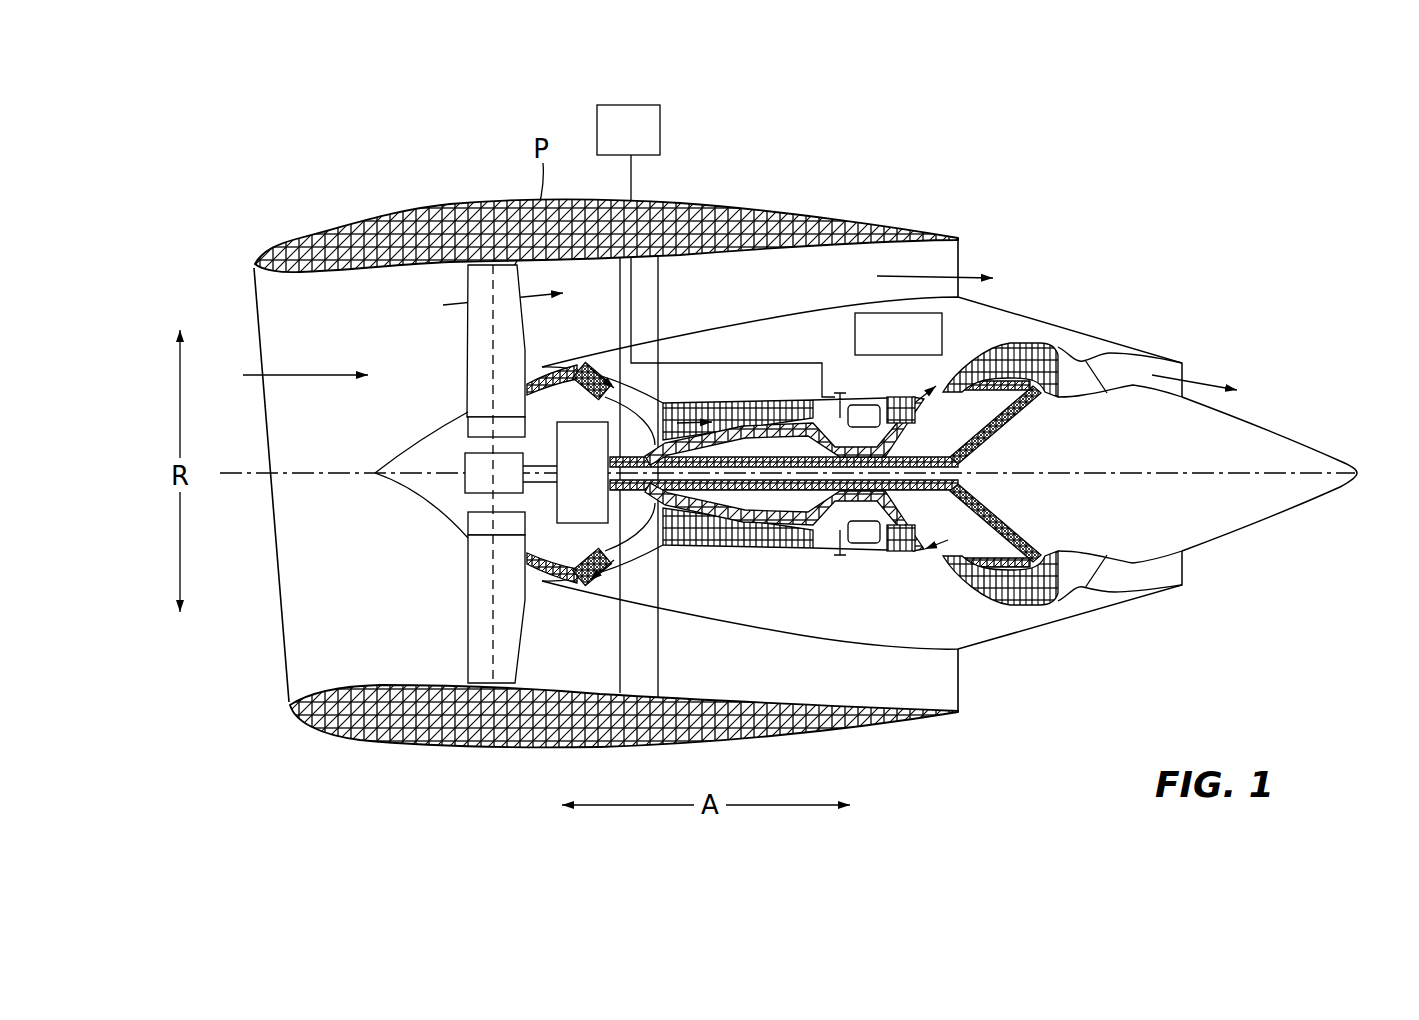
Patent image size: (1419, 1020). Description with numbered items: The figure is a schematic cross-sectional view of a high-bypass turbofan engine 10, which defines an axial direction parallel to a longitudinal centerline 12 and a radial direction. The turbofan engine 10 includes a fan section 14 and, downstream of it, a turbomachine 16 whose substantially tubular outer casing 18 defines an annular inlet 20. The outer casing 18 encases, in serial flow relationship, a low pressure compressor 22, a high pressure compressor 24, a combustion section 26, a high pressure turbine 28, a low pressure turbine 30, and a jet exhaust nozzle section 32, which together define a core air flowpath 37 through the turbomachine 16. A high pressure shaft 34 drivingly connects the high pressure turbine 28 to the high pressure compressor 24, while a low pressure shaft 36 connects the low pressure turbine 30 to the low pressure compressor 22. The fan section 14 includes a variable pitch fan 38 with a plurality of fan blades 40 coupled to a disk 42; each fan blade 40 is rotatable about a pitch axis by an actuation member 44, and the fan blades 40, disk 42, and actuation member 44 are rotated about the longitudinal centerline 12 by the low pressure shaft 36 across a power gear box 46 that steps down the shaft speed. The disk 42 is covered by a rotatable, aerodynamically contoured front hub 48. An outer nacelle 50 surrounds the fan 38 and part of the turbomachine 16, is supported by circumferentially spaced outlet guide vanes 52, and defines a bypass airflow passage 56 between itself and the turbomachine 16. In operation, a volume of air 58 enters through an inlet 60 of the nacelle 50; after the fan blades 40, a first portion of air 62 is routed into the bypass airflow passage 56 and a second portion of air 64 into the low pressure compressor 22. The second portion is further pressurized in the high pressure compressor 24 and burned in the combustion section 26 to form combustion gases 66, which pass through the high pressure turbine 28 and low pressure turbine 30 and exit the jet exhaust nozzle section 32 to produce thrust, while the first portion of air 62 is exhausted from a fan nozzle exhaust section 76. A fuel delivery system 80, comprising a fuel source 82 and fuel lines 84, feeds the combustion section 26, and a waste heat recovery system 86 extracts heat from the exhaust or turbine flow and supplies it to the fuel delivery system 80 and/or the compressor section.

The turbofan engine 10 is at (1103, 217).
The longitudinal centerline 12 is at (1125, 472).
The fan section 14 is at (425, 283).
The turbomachine 16 is at (779, 352).
The outer casing 18 is at (817, 637).
The annular inlet 20 is at (558, 579).
The low pressure compressor 22 is at (617, 548).
The high pressure compressor 24 is at (688, 535).
The combustion section 26 is at (853, 557).
The high pressure turbine 28 is at (994, 542).
The low pressure turbine 30 is at (1043, 605).
The jet exhaust nozzle section 32 is at (1103, 590).
The high pressure shaft 34 is at (866, 440).
The low pressure shaft 36 is at (995, 434).
The core air flowpath 37 is at (641, 550).
The variable pitch fan 38 is at (427, 530).
The fan blades 40 is at (465, 622).
The disk 42 is at (483, 427).
The actuation member 44 is at (467, 455).
The power gear box 46 is at (600, 437).
The front hub 48 is at (468, 537).
The outer nacelle 50 is at (516, 753).
The outlet guide vanes 52 is at (661, 281).
The bypass airflow passage 56 is at (794, 293).
The volume of air 58 is at (303, 372).
The inlet 60 is at (285, 678).
The first portion of air 62 is at (483, 303).
The second portion of air 64 is at (544, 366).
The combustion gases 66 is at (1002, 355).
The fan nozzle exhaust section 76 is at (948, 260).
The fuel delivery system 80 is at (718, 126).
The fuel source 82 is at (638, 105).
The fuel lines 84 is at (633, 175).
The waste heat recovery system 86 is at (862, 313).